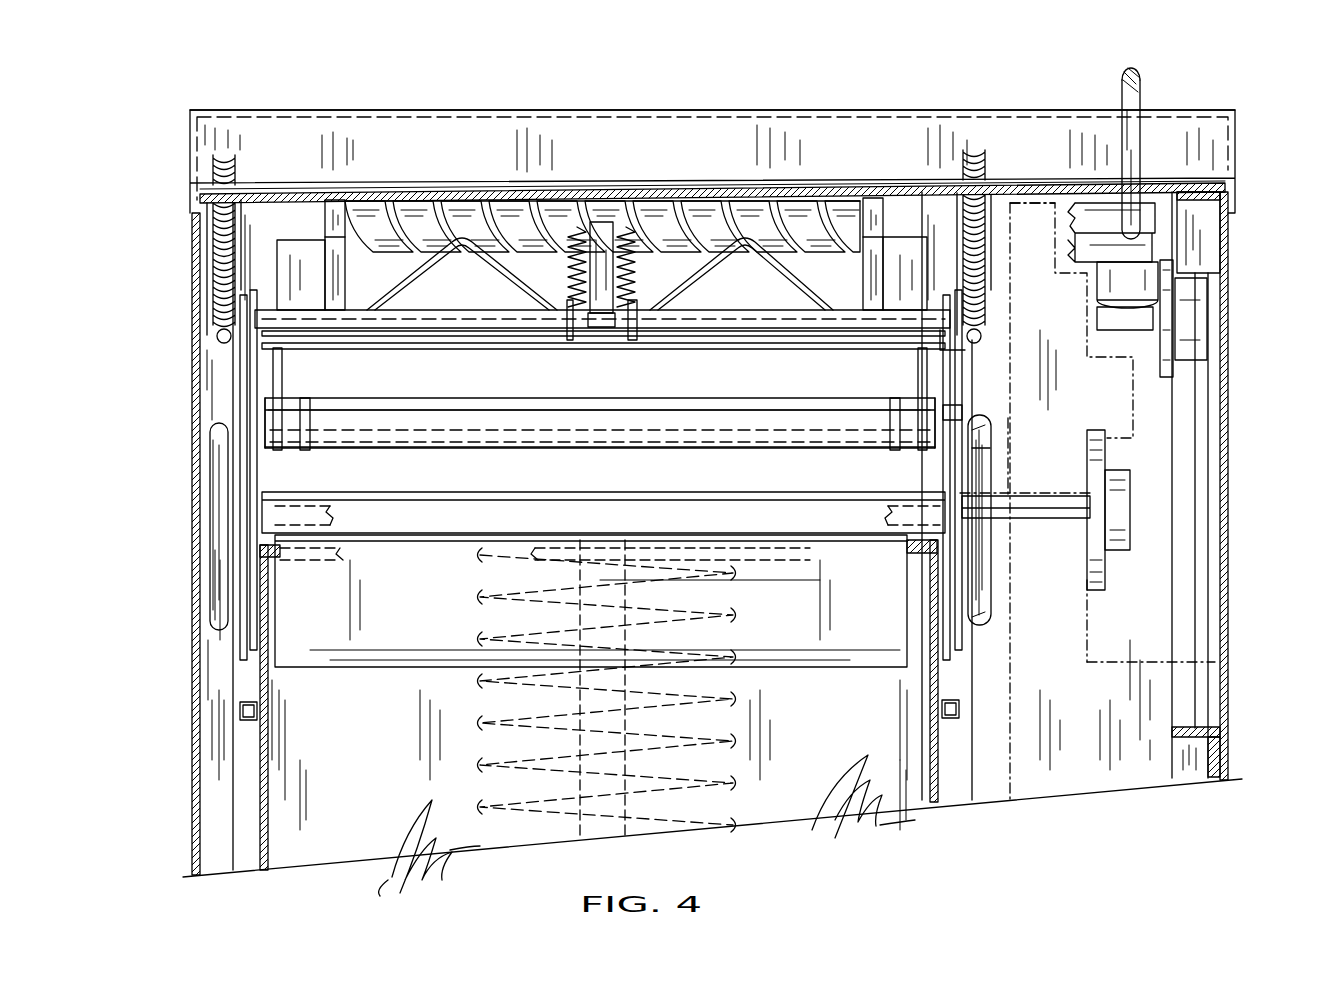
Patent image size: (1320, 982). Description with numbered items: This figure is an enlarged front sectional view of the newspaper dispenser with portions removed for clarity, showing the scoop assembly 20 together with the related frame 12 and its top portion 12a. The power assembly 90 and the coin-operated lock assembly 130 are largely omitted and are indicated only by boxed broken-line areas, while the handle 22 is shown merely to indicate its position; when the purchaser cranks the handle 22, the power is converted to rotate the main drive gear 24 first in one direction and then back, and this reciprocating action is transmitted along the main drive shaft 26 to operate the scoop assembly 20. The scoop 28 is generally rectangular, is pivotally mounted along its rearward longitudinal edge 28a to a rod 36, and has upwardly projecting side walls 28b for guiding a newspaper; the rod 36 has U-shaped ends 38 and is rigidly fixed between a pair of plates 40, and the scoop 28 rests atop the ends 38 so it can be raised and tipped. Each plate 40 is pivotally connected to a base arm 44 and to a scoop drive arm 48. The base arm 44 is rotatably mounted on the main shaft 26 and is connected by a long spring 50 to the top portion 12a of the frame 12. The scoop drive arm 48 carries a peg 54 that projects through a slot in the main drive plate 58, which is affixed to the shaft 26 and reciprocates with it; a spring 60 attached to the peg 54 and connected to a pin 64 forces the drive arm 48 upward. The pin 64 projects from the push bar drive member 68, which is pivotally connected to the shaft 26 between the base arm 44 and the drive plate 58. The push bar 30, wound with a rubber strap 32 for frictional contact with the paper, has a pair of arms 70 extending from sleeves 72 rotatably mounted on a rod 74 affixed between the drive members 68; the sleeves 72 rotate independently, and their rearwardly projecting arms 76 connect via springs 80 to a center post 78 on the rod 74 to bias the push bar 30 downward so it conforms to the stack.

The frame 12 is at (1223, 264).
The top portion of frame 12a is at (855, 109).
The scoop assembly 20 is at (228, 357).
The handle 22 is at (1140, 143).
The main drive gear 24 is at (1105, 461).
The main drive shaft 26 is at (1025, 540).
The scoop 28 is at (297, 375).
The rearward longitudinal edge 28a is at (580, 440).
The side walls 28b is at (281, 425).
The push bar 30 is at (602, 161).
The rubber strap 32 is at (512, 206).
The rod 36 is at (485, 437).
The U-shaped ends 38 is at (308, 398).
The plate 40 is at (262, 458).
The base arm 44 is at (948, 348).
The scoop drive arm 48 is at (947, 415).
The long spring 50 is at (990, 243).
The peg 54 is at (992, 597).
The main drive plate 58 is at (953, 565).
The spring 60 is at (982, 477).
The pin 64 is at (975, 448).
The push bar drive member 68 is at (245, 345).
The arms 70 is at (335, 272).
The sleeves 72 is at (407, 320).
The rod 74 is at (602, 333).
The rearwardly projecting arm 76 is at (568, 341).
The center post 78 is at (652, 228).
The springs 80 is at (601, 262).
The power assembly 90 is at (1023, 215).
The coin-operated lock assembly 130 is at (1126, 720).